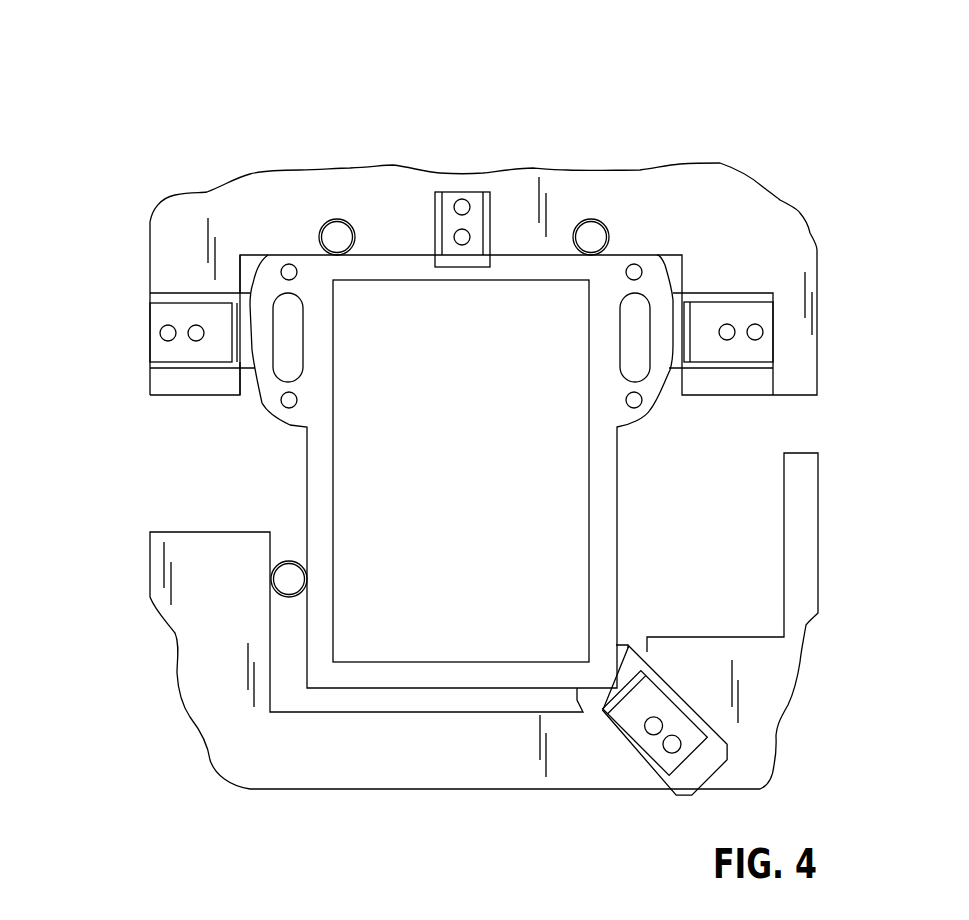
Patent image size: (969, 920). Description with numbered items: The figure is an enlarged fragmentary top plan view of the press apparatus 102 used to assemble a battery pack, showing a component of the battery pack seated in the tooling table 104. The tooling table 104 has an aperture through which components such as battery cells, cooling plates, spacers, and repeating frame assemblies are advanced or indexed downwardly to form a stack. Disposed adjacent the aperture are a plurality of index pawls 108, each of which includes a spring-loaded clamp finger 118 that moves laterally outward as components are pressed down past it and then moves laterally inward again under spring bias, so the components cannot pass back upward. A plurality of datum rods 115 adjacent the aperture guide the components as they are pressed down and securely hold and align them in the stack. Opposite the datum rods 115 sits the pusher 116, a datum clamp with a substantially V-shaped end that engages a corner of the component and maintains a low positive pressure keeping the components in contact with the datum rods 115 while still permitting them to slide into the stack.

The press apparatus 102 is at (781, 92).
The tooling table 104 is at (681, 163).
The index pawl 108 is at (180, 303).
The datum rod 115 is at (345, 220).
The pusher 116 is at (630, 755).
The clamp finger 118 is at (217, 368).